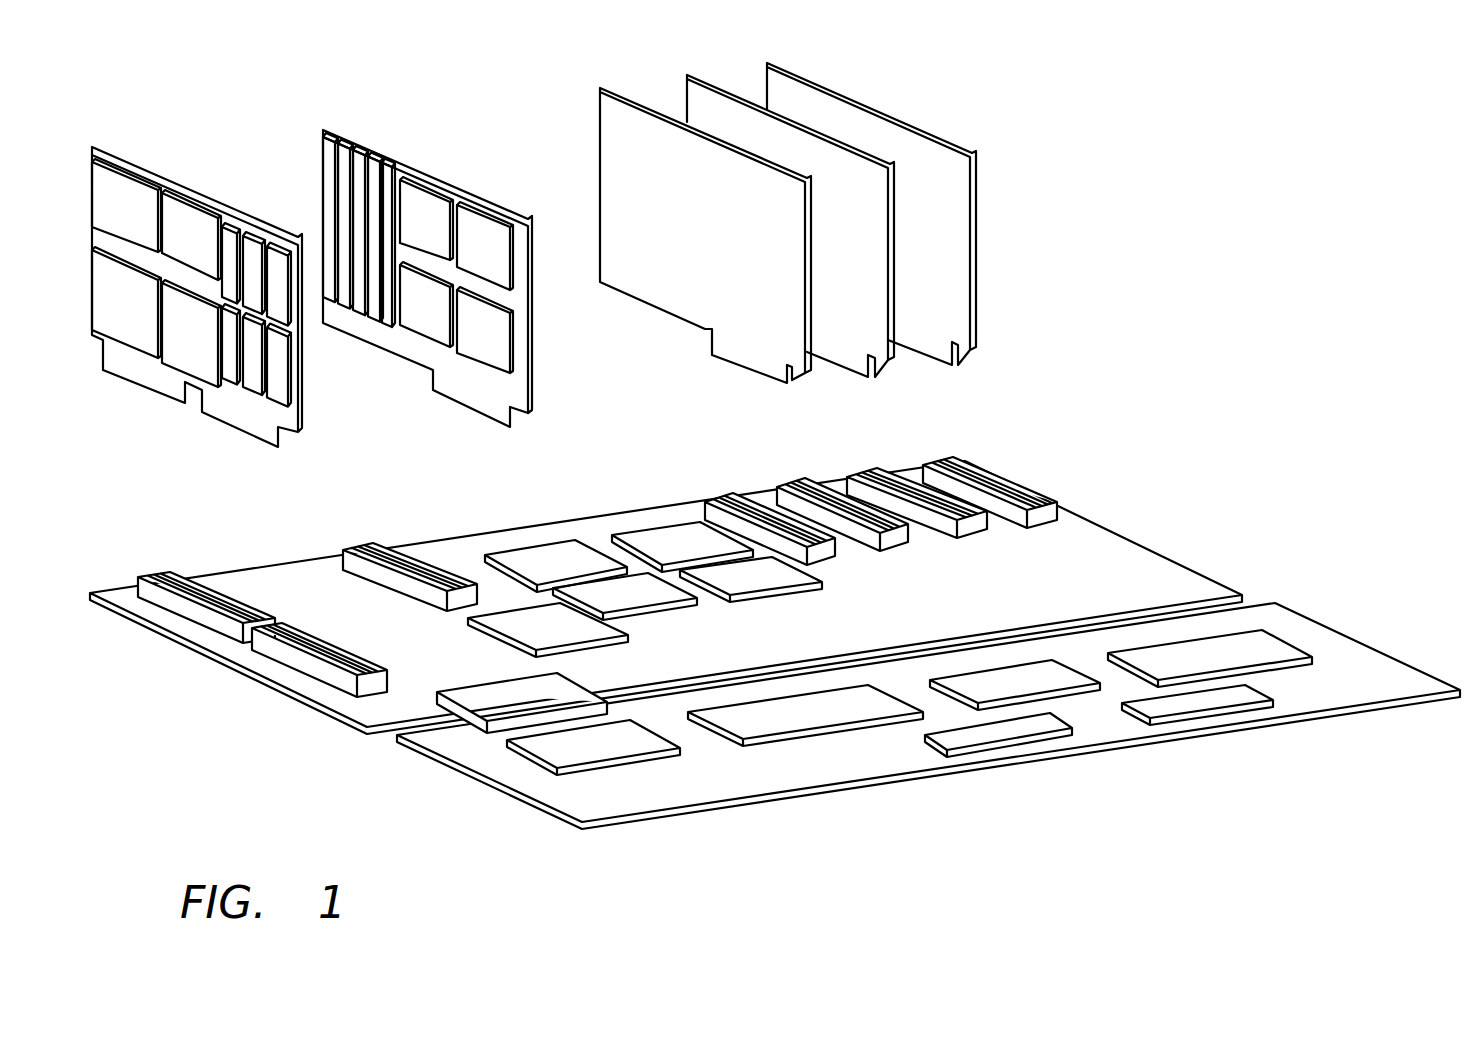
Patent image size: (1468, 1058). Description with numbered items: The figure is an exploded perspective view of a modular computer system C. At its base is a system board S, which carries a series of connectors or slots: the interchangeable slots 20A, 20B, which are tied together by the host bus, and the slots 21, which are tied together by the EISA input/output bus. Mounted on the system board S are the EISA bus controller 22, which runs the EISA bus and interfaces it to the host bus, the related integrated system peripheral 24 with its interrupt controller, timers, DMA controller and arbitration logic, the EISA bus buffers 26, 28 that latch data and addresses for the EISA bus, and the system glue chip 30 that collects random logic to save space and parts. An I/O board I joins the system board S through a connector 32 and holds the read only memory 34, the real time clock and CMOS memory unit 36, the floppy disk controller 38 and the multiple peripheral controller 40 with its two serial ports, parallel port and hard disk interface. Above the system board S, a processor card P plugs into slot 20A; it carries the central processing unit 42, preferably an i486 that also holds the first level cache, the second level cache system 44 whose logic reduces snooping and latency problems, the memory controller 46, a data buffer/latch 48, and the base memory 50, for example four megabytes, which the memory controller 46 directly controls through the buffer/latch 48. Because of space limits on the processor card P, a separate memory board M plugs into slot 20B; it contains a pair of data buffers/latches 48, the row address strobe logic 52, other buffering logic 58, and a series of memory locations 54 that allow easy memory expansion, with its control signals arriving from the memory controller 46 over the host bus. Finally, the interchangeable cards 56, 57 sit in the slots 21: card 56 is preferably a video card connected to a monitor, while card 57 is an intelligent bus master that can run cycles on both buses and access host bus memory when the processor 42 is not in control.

The modular computer system C is at (205, 768).
The processor card P is at (231, 207).
The memory board M is at (433, 168).
The system board S is at (284, 691).
The I/O board I is at (485, 783).
The central processing unit 42 is at (118, 170).
The second level cache system 44 is at (122, 347).
The memory controller 46 is at (188, 210).
The data buffer/latch (EBB) 48 is at (182, 370).
The base memory 50 is at (258, 234).
The row address strobe (RAS) logic 52 is at (417, 333).
The memory locations 54 is at (388, 160).
The video card 56 is at (604, 101).
The bus master card 57 is at (692, 88).
The buffering logic 58 is at (497, 363).
The interchangeable slot 20A is at (380, 667).
The interchangeable slot 20B is at (427, 565).
The slots 21 is at (828, 556).
The EISA bus controller 22 is at (537, 545).
The integrated system peripheral 24 is at (648, 598).
The EISA bus buffer 26 is at (665, 530).
The EISA bus buffer 28 is at (783, 580).
The system glue chip 30 is at (592, 637).
The connector 32 is at (484, 686).
The read only memory 34 is at (618, 748).
The real time clock and CMOS memory unit 36 is at (886, 714).
The floppy disk controller 38 is at (1080, 684).
The multiple peripheral controller 40 is at (1272, 655).